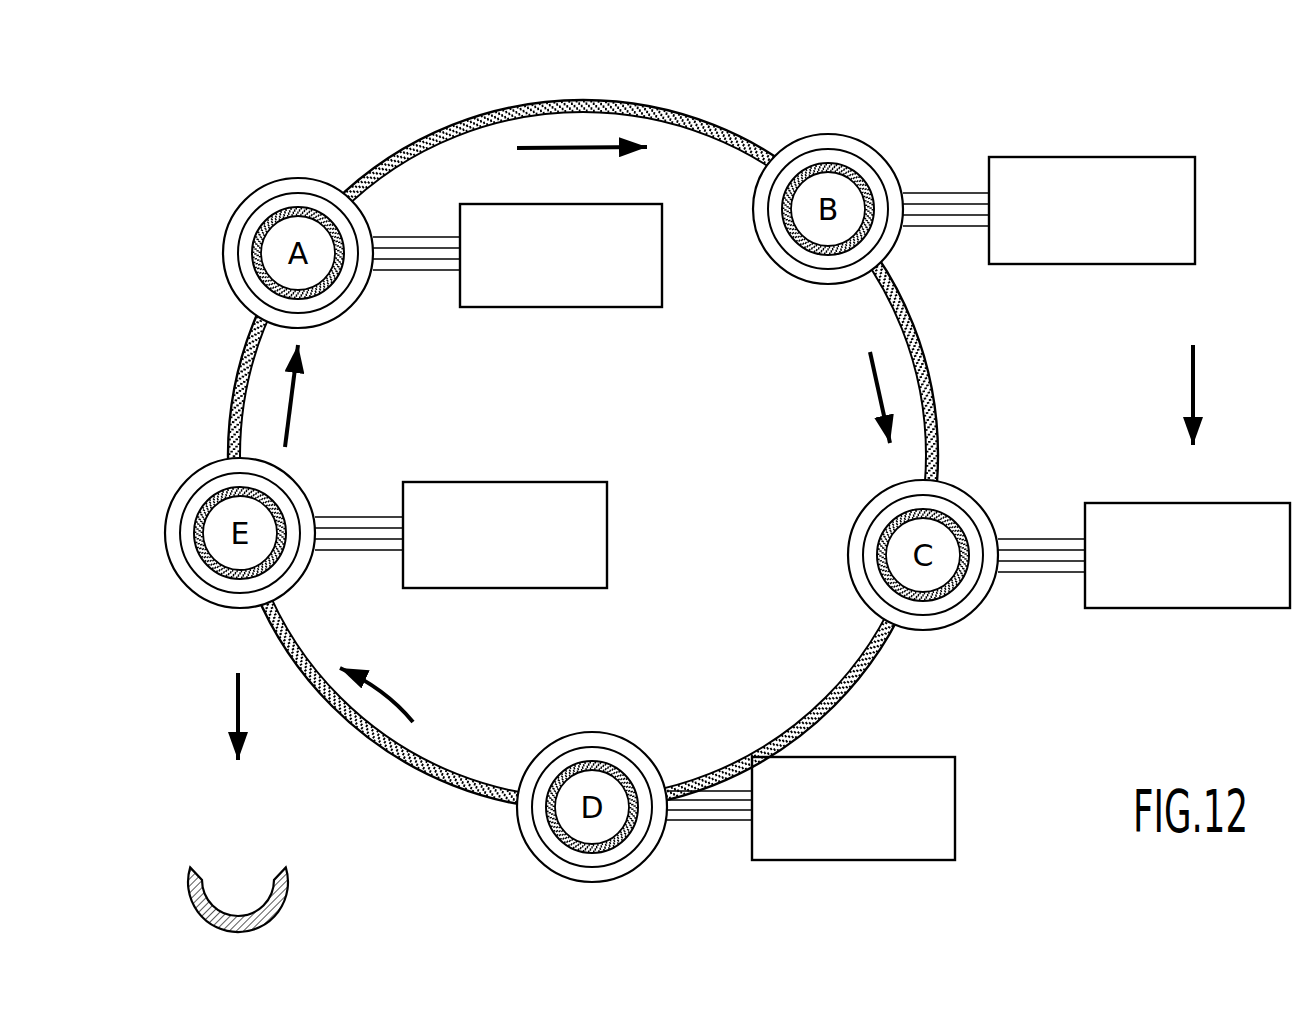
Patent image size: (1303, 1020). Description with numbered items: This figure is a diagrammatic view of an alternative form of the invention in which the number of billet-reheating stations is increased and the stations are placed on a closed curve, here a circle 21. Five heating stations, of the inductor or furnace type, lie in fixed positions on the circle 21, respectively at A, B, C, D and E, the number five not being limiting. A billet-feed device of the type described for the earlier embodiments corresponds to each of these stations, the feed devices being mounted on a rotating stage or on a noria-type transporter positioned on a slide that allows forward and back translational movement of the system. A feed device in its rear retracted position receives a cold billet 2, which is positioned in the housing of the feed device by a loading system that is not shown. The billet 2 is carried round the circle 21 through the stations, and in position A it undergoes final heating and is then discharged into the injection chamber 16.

The billet 2 is at (205, 564).
The injection chamber 16 is at (188, 883).
The circle 21 is at (722, 130).